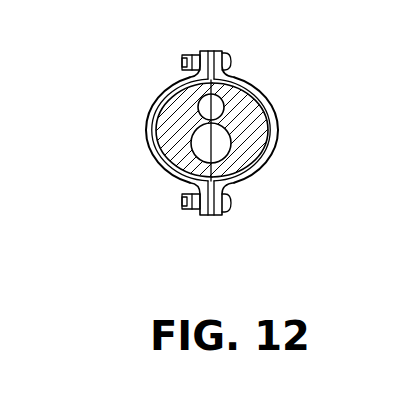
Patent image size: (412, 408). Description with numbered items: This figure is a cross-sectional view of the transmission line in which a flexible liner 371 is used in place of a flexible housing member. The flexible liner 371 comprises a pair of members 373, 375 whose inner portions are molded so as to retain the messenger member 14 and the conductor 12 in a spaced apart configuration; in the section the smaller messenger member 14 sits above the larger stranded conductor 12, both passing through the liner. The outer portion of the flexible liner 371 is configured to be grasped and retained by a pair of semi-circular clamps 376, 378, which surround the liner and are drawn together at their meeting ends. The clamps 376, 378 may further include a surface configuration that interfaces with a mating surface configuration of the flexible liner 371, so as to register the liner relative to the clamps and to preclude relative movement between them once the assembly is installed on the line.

The conductor 12 is at (221, 139).
The messenger member 14 is at (220, 98).
The flexible liner 371 is at (177, 143).
The member of flexible liner 373 is at (180, 112).
The member of flexible liner 375 is at (246, 119).
The semi-circular clamp 376 is at (176, 176).
The semi-circular clamp 378 is at (255, 173).